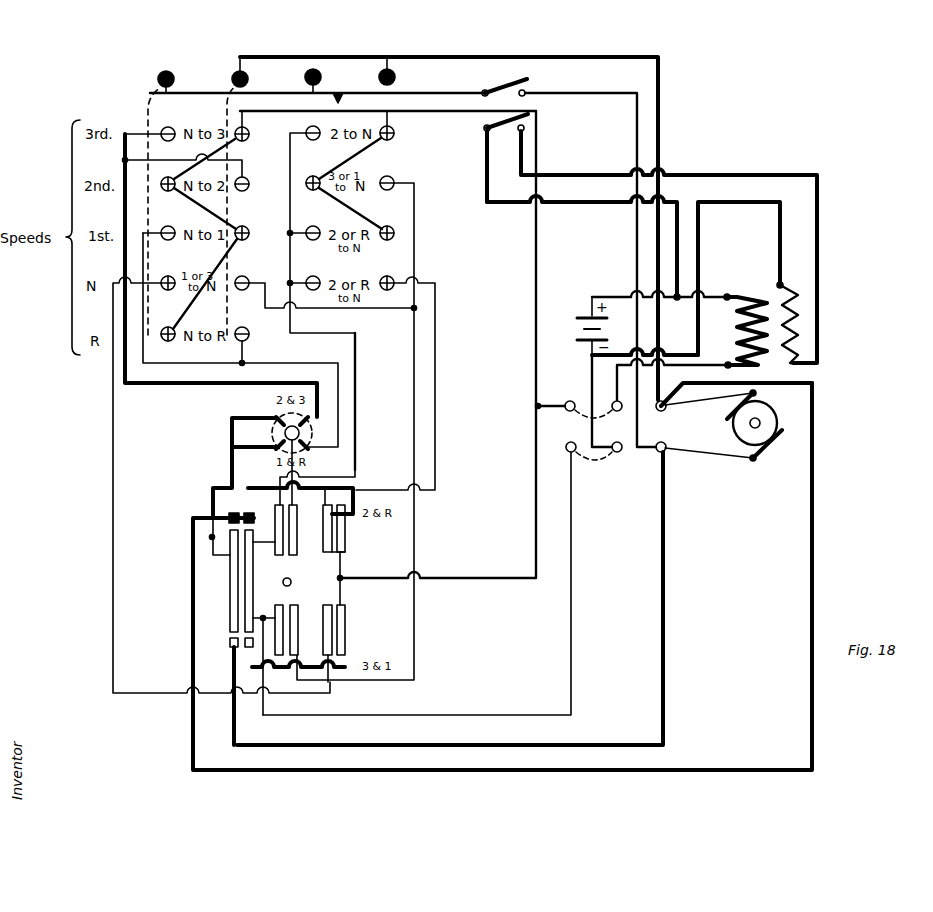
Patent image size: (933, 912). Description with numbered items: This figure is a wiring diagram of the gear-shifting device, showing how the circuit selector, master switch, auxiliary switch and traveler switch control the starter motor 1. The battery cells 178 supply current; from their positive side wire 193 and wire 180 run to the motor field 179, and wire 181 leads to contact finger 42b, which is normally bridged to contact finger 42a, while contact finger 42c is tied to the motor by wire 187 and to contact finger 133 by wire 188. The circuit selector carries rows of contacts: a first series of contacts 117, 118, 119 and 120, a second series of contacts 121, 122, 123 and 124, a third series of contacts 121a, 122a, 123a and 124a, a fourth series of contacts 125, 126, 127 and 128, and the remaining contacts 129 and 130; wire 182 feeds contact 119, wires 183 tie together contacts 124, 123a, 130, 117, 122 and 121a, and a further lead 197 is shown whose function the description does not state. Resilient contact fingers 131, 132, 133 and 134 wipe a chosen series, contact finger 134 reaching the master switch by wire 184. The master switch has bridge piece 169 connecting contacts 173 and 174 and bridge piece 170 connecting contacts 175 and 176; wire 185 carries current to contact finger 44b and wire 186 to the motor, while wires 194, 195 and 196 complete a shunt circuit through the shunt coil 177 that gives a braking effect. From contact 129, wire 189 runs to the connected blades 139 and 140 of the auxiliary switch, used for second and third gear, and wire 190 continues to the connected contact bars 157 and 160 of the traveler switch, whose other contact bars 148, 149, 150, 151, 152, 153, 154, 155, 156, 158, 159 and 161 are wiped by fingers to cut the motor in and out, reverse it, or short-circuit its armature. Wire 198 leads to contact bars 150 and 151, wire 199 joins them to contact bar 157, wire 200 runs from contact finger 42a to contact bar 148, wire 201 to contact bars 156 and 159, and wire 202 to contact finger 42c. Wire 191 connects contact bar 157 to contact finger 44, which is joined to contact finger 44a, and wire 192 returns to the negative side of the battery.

The starter motor 1 is at (777, 423).
The contact finger 42a is at (566, 403).
The contact finger 42b is at (613, 403).
The contact finger 42c is at (657, 403).
The contact finger 44 is at (566, 447).
The contact finger 44a is at (617, 452).
The contact finger 44b is at (664, 452).
The contact 117 is at (394, 133).
The contact 118 is at (306, 130).
The contact 119 is at (249, 136).
The contact 120 is at (170, 127).
The contact 121 is at (394, 181).
The contact 121a is at (392, 227).
The contact 122 is at (313, 176).
The contact 122a is at (311, 226).
The contact 123 is at (249, 182).
The contact 123a is at (250, 220).
The contact 124 is at (160, 183).
The contact 124a is at (170, 220).
The contact 125 is at (385, 276).
The contact 126 is at (313, 276).
The contact 127 is at (244, 276).
The contact 128 is at (170, 276).
The contact 129 is at (249, 336).
The contact 130 is at (166, 341).
The resilient contact finger 131 is at (395, 77).
The resilient contact finger 132 is at (321, 77).
The resilient contact finger 133 is at (248, 79).
The resilient contact finger 134 is at (174, 79).
The blade 139 is at (305, 442).
The blade 140 is at (285, 436).
The contact bar 148 is at (345, 545).
The contact bar 149 is at (318, 560).
The contact bar 150 is at (302, 520).
The contact bar 151 is at (275, 560).
The contact bar 152 is at (345, 628).
The contact bar 153 is at (322, 630).
The contact bar 154 is at (298, 615).
The contact bar 155 is at (258, 605).
The contact bar 156 is at (252, 500).
The contact bar 157 is at (244, 568).
The contact bar 158 is at (232, 660).
The contact bar 159 is at (228, 515).
The contact bar 160 is at (232, 606).
The contact bar 161 is at (228, 641).
The bridge piece 169 is at (527, 79).
The bridge piece 170 is at (487, 150).
The contact 173 is at (500, 88).
The contact 174 is at (527, 91).
The contact 175 is at (484, 128).
The contact 176 is at (525, 128).
The shunt coil 177 is at (795, 330).
The battery cells 178 is at (588, 318).
The motor field 179 is at (747, 320).
The wire 180 is at (727, 294).
The wire 181 is at (718, 365).
The wire 182 is at (534, 268).
The wires 183 is at (195, 307).
The wire 184 is at (447, 93).
The wire 185 is at (636, 140).
The wire 186 is at (700, 455).
The wire 187 is at (700, 412).
The wire 188 is at (658, 97).
The wire 189 is at (295, 363).
The wire 190 is at (232, 468).
The wire 191 is at (315, 715).
The wire 192 is at (592, 357).
The wire 193 is at (614, 297).
The wire 194 is at (600, 202).
The wire 195 is at (745, 175).
The wire 196 is at (792, 236).
The wiper contact 197 is at (362, 165).
The wire 198 is at (355, 385).
The wire 199 is at (272, 534).
The wire 200 is at (472, 578).
The wire 201 is at (352, 488).
The wire 202 is at (320, 770).